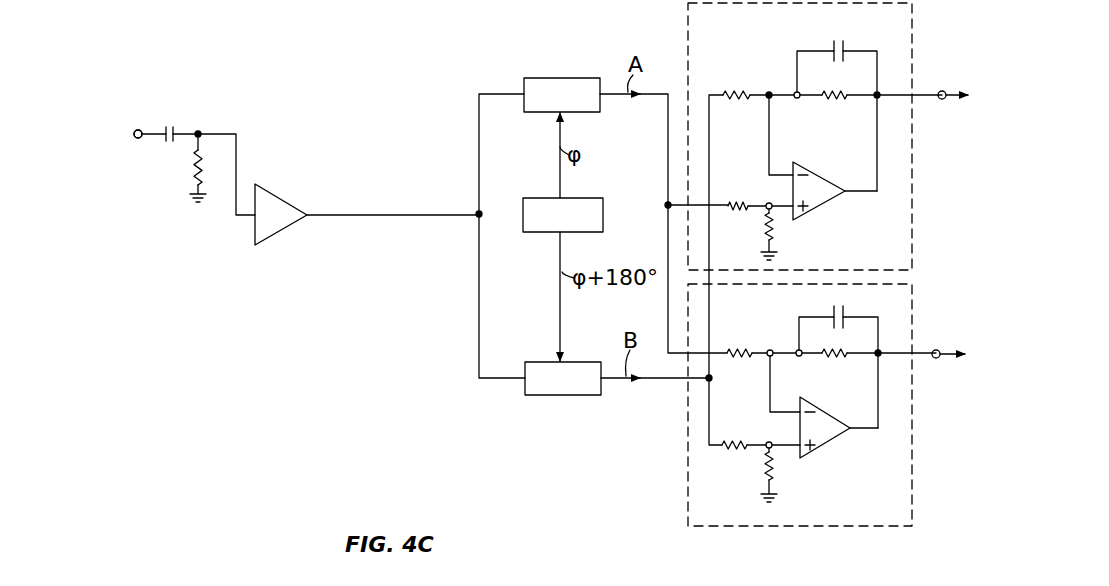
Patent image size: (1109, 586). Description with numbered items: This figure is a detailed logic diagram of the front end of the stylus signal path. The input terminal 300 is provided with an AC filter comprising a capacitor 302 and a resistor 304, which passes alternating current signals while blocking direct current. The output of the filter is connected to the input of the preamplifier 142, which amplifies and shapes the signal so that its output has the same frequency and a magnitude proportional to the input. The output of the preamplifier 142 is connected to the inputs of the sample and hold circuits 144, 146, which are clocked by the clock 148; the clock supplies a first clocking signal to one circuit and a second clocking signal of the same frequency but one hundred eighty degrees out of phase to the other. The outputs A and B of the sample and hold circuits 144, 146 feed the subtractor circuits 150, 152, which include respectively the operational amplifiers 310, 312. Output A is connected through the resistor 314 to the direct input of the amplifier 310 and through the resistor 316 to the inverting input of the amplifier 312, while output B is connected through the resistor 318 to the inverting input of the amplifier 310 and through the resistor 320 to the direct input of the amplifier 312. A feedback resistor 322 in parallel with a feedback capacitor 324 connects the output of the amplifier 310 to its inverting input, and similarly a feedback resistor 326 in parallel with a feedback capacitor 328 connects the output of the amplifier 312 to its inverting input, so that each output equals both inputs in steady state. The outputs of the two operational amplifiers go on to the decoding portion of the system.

The preamplifier 142 is at (290, 196).
The sample and hold circuit 144 is at (553, 78).
The sample and hold circuit 146 is at (540, 362).
The clock 148 is at (540, 198).
The subtracting circuit 150 is at (912, 235).
The subtracting circuit 152 is at (912, 486).
The input terminal 300 is at (140, 140).
The capacitor 302 is at (172, 127).
The resistor 304 is at (195, 172).
The operational amplifier 310 is at (825, 205).
The operational amplifier 312 is at (838, 440).
The resistor 314 is at (748, 168).
The resistor 316 is at (752, 327).
The resistor 318 is at (735, 90).
The resistor 320 is at (755, 414).
The feedback resistor 322 is at (842, 98).
The feedback capacitor 324 is at (838, 41).
The feedback resistor 326 is at (845, 358).
The feedback capacitor 328 is at (838, 306).